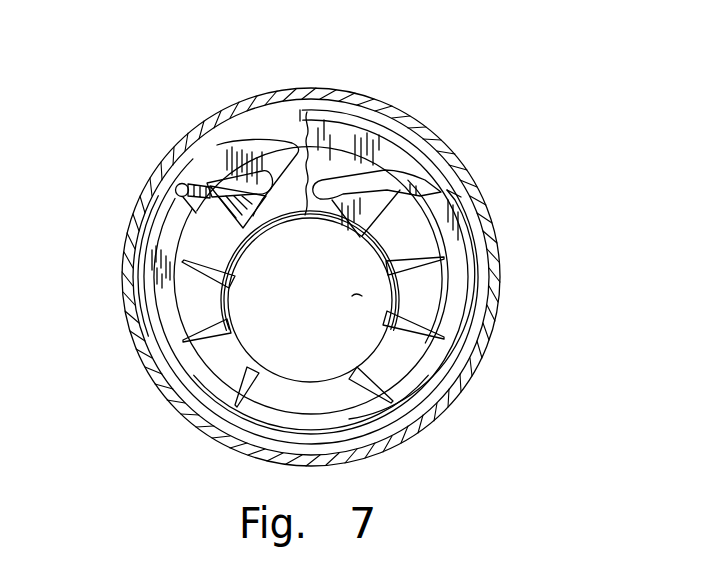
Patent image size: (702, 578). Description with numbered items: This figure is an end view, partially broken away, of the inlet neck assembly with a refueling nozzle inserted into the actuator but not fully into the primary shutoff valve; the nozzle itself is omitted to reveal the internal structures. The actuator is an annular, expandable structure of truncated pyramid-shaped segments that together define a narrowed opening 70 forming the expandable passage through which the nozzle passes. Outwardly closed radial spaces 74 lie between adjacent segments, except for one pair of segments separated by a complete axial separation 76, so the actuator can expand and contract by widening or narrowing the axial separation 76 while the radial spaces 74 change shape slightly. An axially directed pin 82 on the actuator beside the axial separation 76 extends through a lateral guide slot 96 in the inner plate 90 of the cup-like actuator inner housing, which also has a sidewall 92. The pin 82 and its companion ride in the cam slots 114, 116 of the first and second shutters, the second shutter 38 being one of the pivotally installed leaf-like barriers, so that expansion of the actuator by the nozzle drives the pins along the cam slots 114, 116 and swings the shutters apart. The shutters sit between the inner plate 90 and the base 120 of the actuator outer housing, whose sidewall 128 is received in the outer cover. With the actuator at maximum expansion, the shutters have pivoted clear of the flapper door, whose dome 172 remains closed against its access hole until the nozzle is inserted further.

The second shutter 38 is at (157, 240).
The narrowed opening 70 is at (304, 387).
The outwardly closed radial spaces 74 is at (253, 368).
The complete axial separation 76 is at (279, 213).
The pin 82 is at (181, 185).
The inner plate 90 is at (323, 142).
The sidewall 92 is at (458, 218).
The lateral guide slot 96 is at (330, 180).
The cam slot 114 is at (372, 183).
The cam slot 116 is at (231, 187).
The base 120 is at (277, 121).
The sidewall 128 is at (440, 147).
The dome 172 is at (356, 296).